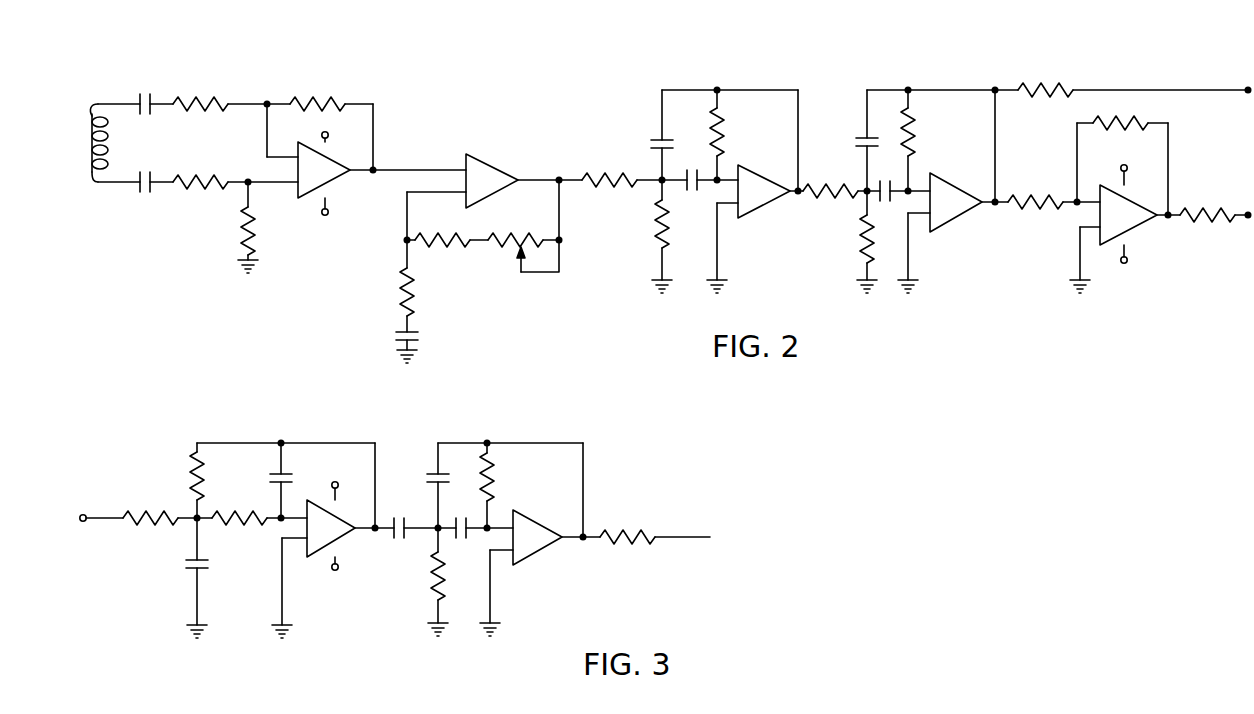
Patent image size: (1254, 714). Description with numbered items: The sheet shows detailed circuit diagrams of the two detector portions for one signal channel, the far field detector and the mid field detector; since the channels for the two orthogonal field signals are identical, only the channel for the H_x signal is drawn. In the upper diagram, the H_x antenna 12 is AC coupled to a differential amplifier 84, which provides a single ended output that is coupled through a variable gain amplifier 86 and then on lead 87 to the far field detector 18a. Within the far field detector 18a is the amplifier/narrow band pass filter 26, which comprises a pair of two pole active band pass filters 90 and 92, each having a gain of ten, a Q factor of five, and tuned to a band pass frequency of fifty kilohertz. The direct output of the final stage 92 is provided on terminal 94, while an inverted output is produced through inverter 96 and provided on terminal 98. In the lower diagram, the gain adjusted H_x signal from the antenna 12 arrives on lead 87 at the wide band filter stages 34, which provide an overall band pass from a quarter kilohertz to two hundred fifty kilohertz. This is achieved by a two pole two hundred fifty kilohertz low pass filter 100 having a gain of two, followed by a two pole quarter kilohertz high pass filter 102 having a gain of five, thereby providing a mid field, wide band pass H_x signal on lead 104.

In FIG. 2, the H_x antenna 12 is at (92, 108).
In FIG. 2, the differential amplifier 84 is at (353, 153).
In FIG. 2, the variable gain amplifier 86 is at (493, 178).
In FIG. 2, the lead 87 is at (542, 179).
In FIG. 3, the lead 87 is at (105, 517).
In FIG. 2, the amplifier/narrow band pass filter 26 is at (812, 274).
In FIG. 2, the two pole active band pass filter 90 is at (782, 141).
In FIG. 2, the far field detector 18a is at (912, 69).
In FIG. 2, the two pole active band pass filter 92 is at (976, 141).
In FIG. 2, the terminal 94 is at (1231, 82).
In FIG. 2, the inverter 96 is at (1150, 183).
In FIG. 2, the terminal 98 is at (1233, 211).
In FIG. 3, the wide band filter stages 34 is at (382, 634).
In FIG. 3, the low pass filter 100 is at (334, 468).
In FIG. 3, the high pass filter 102 is at (562, 490).
In FIG. 3, the lead 104 is at (695, 523).